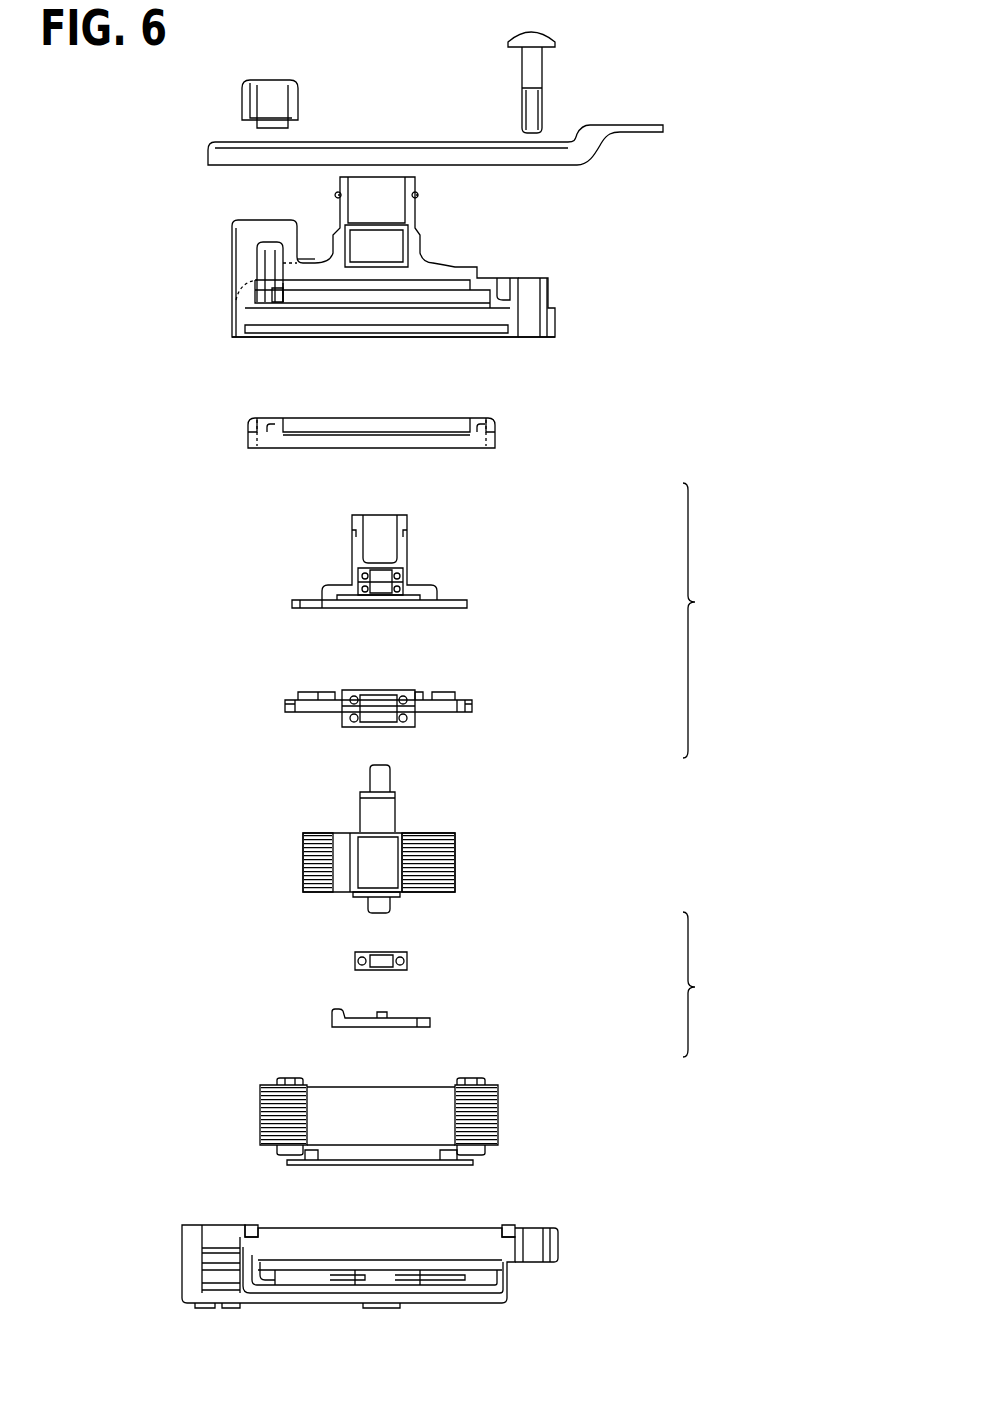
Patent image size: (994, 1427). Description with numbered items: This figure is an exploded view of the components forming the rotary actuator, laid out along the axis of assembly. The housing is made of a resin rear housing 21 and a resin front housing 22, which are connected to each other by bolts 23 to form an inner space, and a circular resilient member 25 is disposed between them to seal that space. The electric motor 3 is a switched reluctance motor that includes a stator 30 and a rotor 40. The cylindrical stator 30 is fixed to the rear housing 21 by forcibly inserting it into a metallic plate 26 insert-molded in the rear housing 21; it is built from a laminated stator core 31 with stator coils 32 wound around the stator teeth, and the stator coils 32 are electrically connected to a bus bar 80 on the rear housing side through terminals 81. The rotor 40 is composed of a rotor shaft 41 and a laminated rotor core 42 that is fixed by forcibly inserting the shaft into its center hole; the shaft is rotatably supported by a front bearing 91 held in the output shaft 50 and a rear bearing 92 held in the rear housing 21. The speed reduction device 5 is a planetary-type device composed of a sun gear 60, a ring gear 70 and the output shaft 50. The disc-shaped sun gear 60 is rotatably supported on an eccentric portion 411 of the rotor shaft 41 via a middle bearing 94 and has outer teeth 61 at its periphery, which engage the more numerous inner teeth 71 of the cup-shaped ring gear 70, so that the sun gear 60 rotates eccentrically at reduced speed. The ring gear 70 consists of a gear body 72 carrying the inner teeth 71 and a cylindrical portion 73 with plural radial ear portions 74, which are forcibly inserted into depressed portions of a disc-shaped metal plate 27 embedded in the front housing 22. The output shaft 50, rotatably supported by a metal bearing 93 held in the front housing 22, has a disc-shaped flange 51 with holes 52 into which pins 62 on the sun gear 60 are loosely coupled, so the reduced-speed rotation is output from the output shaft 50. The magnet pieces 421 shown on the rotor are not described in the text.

The electric motor 3 is at (700, 984).
The speed reduction device 5 is at (700, 620).
The rear housing 21 is at (558, 1240).
The front housing 22 is at (555, 320).
The bolt 23 is at (553, 40).
The resilient member 25 is at (250, 1226).
The metallic plate 26 is at (540, 1262).
The metal plate 27 is at (297, 333).
The stator 30 is at (505, 1092).
The stator core 31 is at (498, 1126).
The stator coils 32 is at (280, 1078).
The rotor 40 is at (460, 877).
The rotor shaft 41 is at (390, 872).
The rotor core 42 is at (430, 833).
The eccentric portion 411 is at (385, 808).
The magnet piece 421 is at (457, 845).
The output shaft 50 is at (461, 613).
The flange 51 is at (450, 600).
The holes 52 is at (318, 600).
The sun gear 60 is at (450, 714).
The outer teeth 61 is at (472, 705).
The pins 62 is at (300, 692).
The ring gear 70 is at (472, 454).
The inner teeth 71 is at (455, 428).
The gear body 72 is at (481, 418).
The cylindrical portion 73 is at (497, 436).
The ear portions 74 is at (247, 436).
The bus bar 80 is at (473, 1163).
The terminals 81 is at (310, 1160).
The front bearing 91 is at (403, 575).
The rear bearing 92 is at (407, 957).
The metal bearing 93 is at (408, 245).
The middle bearing 94 is at (342, 716).